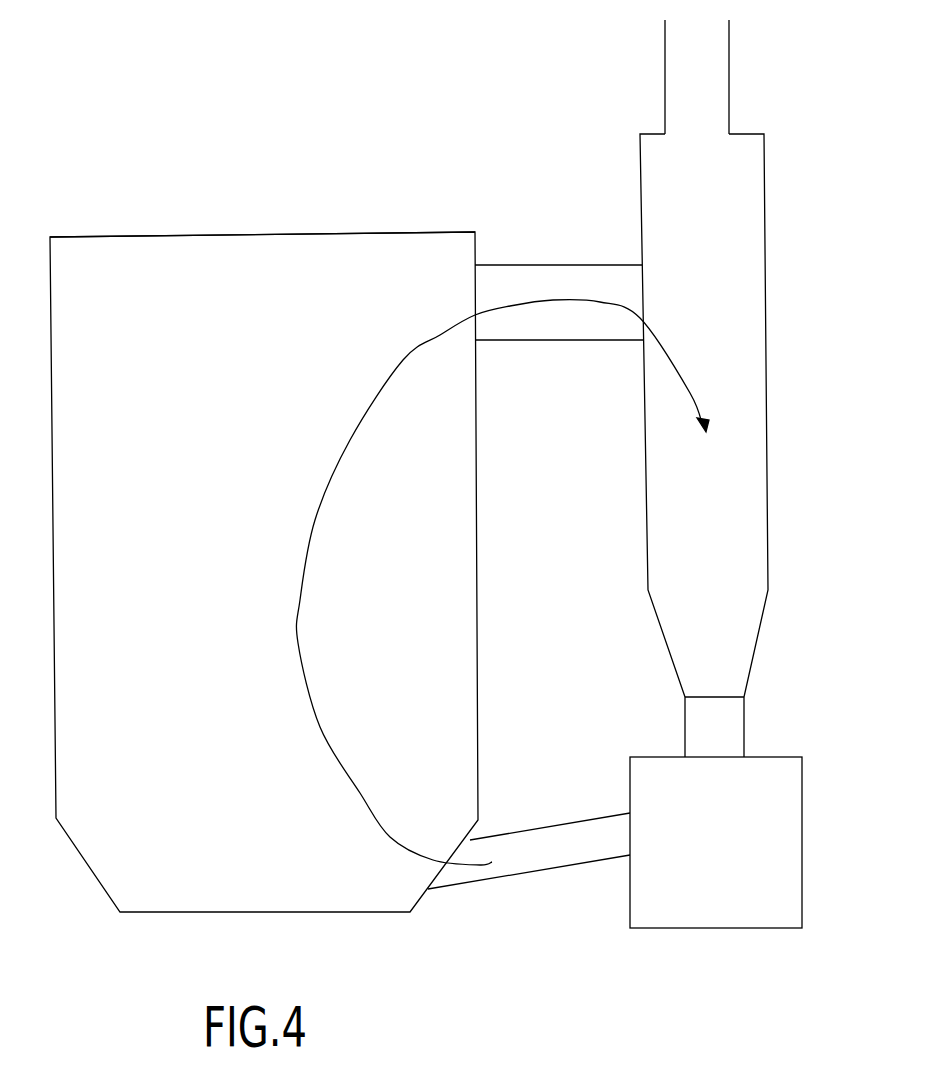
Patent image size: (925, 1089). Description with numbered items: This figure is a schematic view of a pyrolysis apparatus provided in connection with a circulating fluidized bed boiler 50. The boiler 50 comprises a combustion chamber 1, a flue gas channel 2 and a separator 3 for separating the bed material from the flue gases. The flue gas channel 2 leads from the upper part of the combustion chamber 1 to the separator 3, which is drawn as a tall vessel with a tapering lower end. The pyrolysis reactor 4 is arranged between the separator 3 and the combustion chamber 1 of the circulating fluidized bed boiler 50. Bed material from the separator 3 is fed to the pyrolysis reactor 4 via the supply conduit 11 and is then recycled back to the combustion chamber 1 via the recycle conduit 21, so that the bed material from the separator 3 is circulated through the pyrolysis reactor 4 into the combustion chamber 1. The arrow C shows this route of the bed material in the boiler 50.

The combustion chamber 1 is at (117, 285).
The circulating fluidized bed boiler 50 is at (240, 232).
The flue gas channel 2 is at (542, 277).
The separator 3 is at (730, 250).
The supply conduit 11 is at (730, 725).
The pyrolysis reactor 4 is at (718, 912).
The recycle conduit 21 is at (546, 852).
The route of the bed material C is at (403, 360).